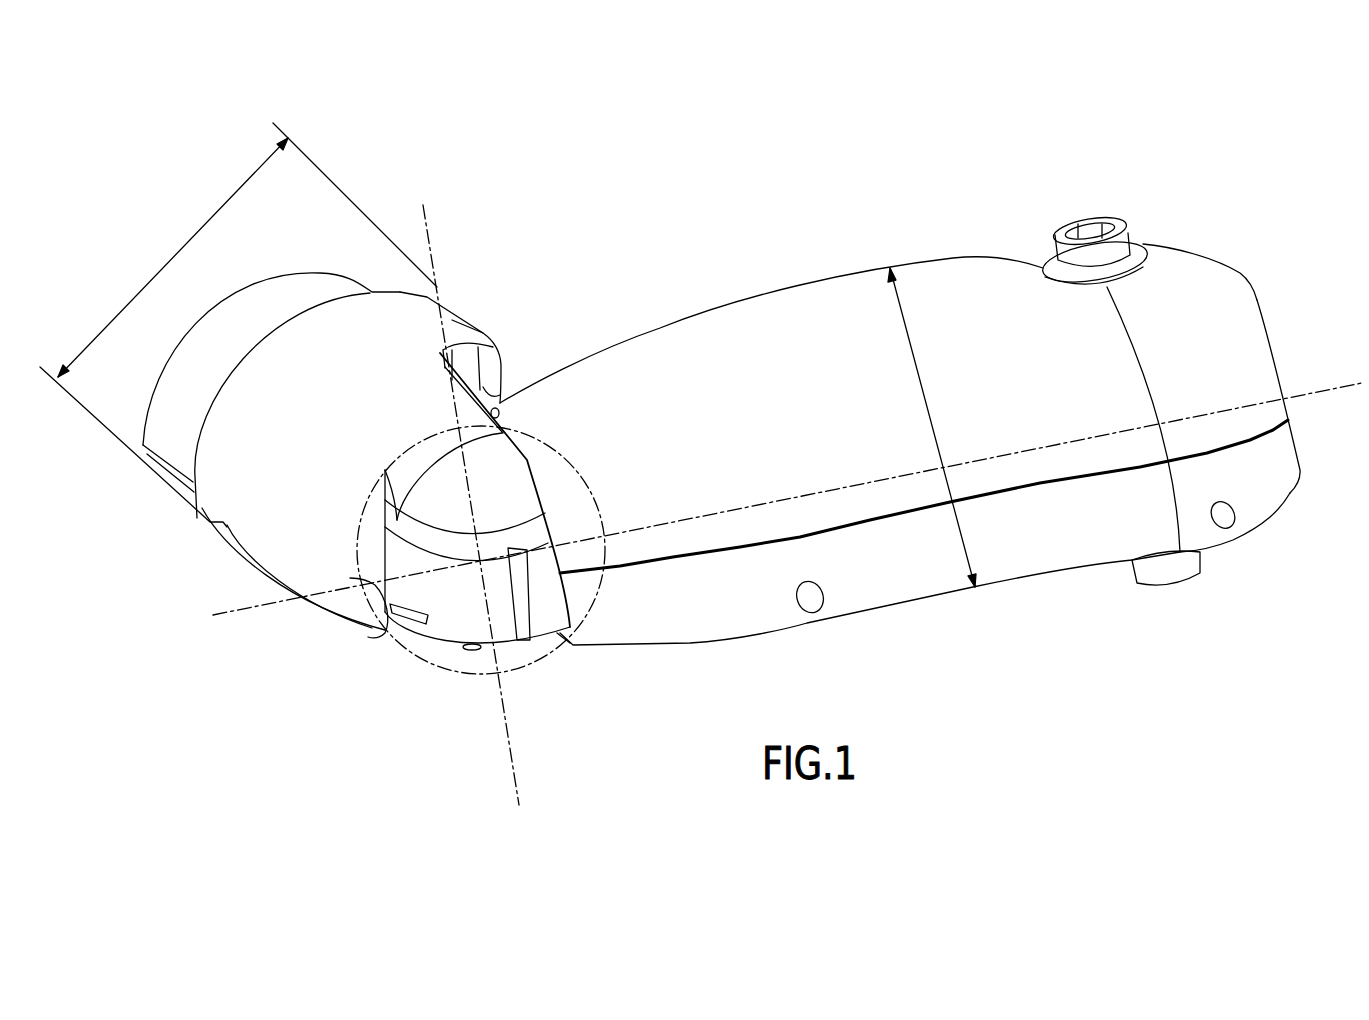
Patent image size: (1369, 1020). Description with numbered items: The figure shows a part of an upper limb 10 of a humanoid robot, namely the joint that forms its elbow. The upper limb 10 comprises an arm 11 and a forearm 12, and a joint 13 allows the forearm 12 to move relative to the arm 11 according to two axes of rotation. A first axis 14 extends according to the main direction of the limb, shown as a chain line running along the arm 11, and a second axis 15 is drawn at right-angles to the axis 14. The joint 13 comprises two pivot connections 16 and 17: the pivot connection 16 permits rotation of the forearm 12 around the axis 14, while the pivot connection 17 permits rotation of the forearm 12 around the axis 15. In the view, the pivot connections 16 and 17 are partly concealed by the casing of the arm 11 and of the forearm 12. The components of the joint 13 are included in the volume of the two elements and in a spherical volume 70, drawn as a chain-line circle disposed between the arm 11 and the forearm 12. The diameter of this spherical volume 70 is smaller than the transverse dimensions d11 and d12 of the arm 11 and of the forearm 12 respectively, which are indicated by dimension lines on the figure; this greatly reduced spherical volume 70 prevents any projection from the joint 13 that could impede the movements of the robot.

The upper limb 10 is at (857, 187).
The arm 11 is at (836, 345).
The forearm 12 is at (303, 405).
The joint 13 is at (543, 270).
The first axis 14 is at (1315, 392).
The second axis 15 is at (503, 697).
The pivot connection 16 is at (612, 330).
The pivot connection 17 is at (447, 682).
The spherical volume 70 is at (350, 578).
The transverse dimension of the arm d11 is at (938, 427).
The transverse dimension of the forearm d12 is at (247, 250).